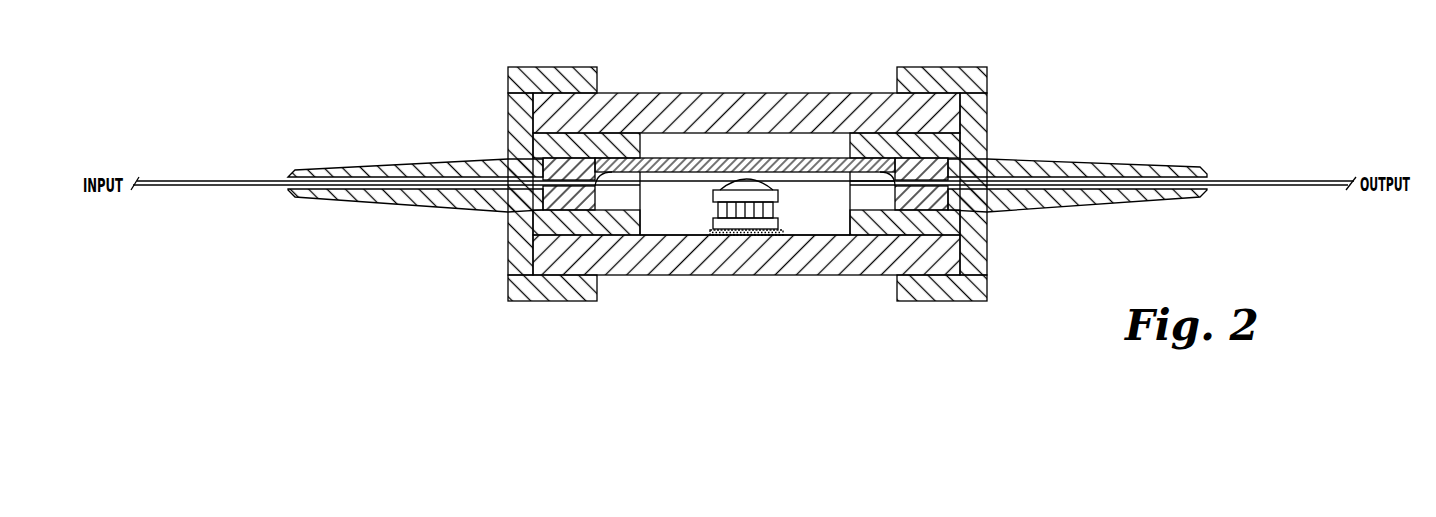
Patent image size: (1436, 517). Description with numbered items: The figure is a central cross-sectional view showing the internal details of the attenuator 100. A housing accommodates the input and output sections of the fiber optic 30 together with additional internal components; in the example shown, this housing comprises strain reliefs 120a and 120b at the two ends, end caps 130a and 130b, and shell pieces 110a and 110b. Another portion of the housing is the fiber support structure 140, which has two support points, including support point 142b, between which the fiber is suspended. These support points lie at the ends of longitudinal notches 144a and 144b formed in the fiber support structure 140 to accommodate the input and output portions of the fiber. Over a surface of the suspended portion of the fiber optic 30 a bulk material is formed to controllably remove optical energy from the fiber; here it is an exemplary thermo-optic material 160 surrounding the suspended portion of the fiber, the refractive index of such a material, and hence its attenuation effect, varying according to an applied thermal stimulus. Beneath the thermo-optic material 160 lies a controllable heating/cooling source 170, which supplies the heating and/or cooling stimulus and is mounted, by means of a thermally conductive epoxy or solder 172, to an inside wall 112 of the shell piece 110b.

The attenuator 100 is at (1172, 89).
The fiber optic 30 is at (1263, 183).
The shell piece 110a is at (852, 103).
The shell piece 110b is at (862, 258).
The inside wall 112 is at (642, 236).
The strain relief 120a is at (403, 168).
The strain relief 120b is at (1070, 170).
The end cap 130a is at (550, 83).
The end cap 130b is at (939, 83).
The fiber support structure 140 is at (664, 160).
The support point 142b is at (884, 189).
The longitudinal notch 144a is at (572, 183).
The longitudinal notch 144b is at (923, 185).
The thermo-optic material 160 is at (749, 186).
The heating/cooling source 170 is at (774, 223).
The thermally conductive epoxy or solder 172 is at (708, 232).